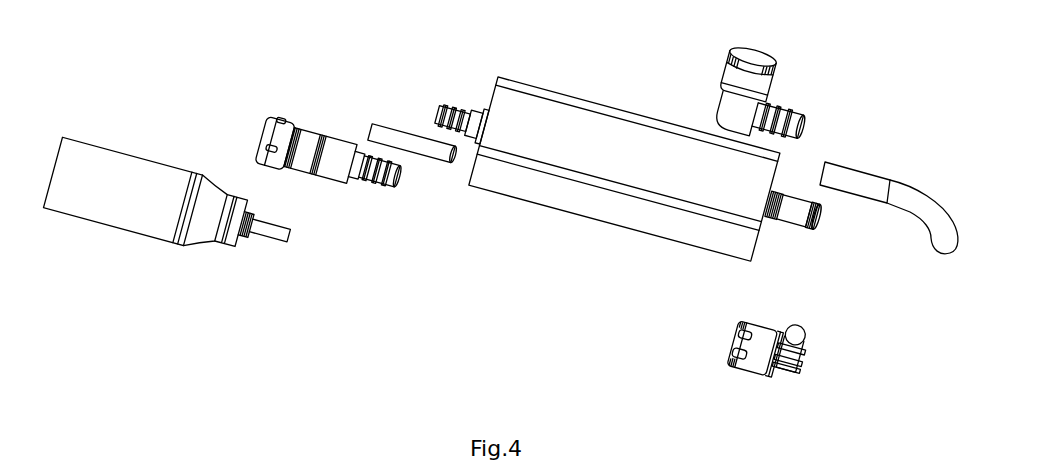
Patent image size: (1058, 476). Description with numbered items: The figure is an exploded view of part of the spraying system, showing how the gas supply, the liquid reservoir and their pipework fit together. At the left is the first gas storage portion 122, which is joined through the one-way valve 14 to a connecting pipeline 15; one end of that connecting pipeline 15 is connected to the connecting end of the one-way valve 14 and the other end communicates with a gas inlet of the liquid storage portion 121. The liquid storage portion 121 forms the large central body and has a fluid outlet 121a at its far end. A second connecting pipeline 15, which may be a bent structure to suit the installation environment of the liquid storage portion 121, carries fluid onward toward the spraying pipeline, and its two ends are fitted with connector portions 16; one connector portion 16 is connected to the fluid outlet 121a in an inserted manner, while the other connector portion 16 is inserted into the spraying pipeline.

The first gas storage portion 122 is at (127, 222).
The one-way valve 14 is at (310, 137).
The connecting pipeline 15 is at (425, 157).
The liquid storage portion 121 is at (570, 210).
The fluid outlet 121a is at (800, 222).
The connector portion 16 is at (758, 47).